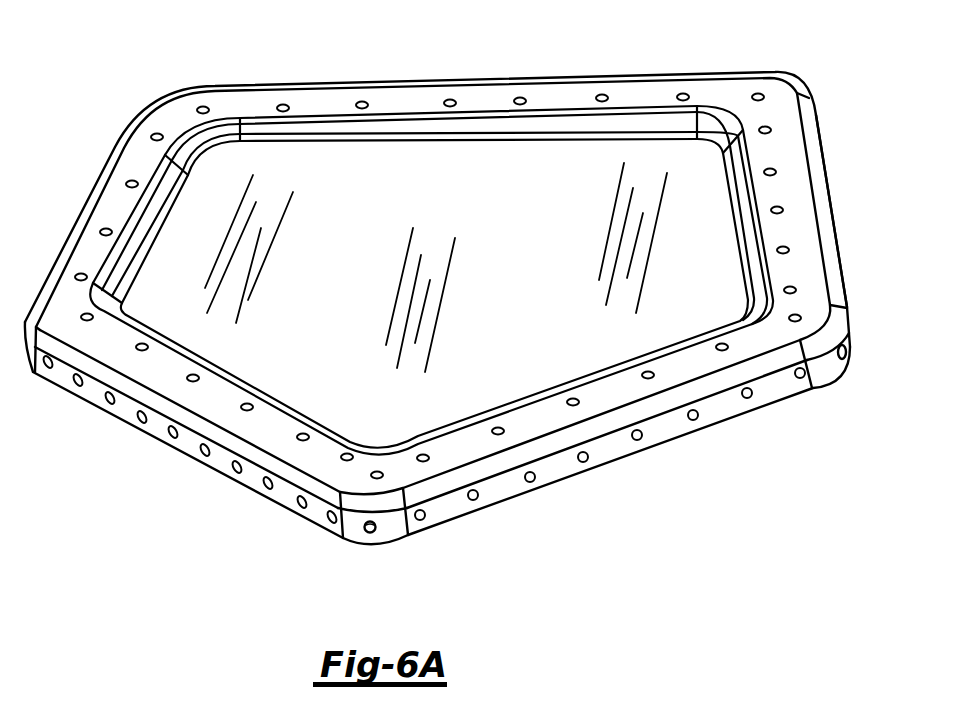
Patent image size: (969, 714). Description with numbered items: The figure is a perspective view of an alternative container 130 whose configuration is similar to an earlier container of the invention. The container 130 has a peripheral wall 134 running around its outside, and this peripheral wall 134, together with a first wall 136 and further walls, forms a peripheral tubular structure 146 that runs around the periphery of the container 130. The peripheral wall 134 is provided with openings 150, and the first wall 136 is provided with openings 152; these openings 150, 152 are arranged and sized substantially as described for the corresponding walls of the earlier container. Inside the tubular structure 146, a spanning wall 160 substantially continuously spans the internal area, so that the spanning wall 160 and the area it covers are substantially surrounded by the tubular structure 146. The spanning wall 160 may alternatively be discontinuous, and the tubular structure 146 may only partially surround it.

The container 130 is at (172, 476).
The peripheral wall 134 is at (770, 393).
The first wall 136 is at (803, 227).
The peripheral tubular structure 146 is at (579, 503).
The openings 150 is at (694, 422).
The openings 152 is at (766, 125).
The spanning wall 160 is at (543, 226).